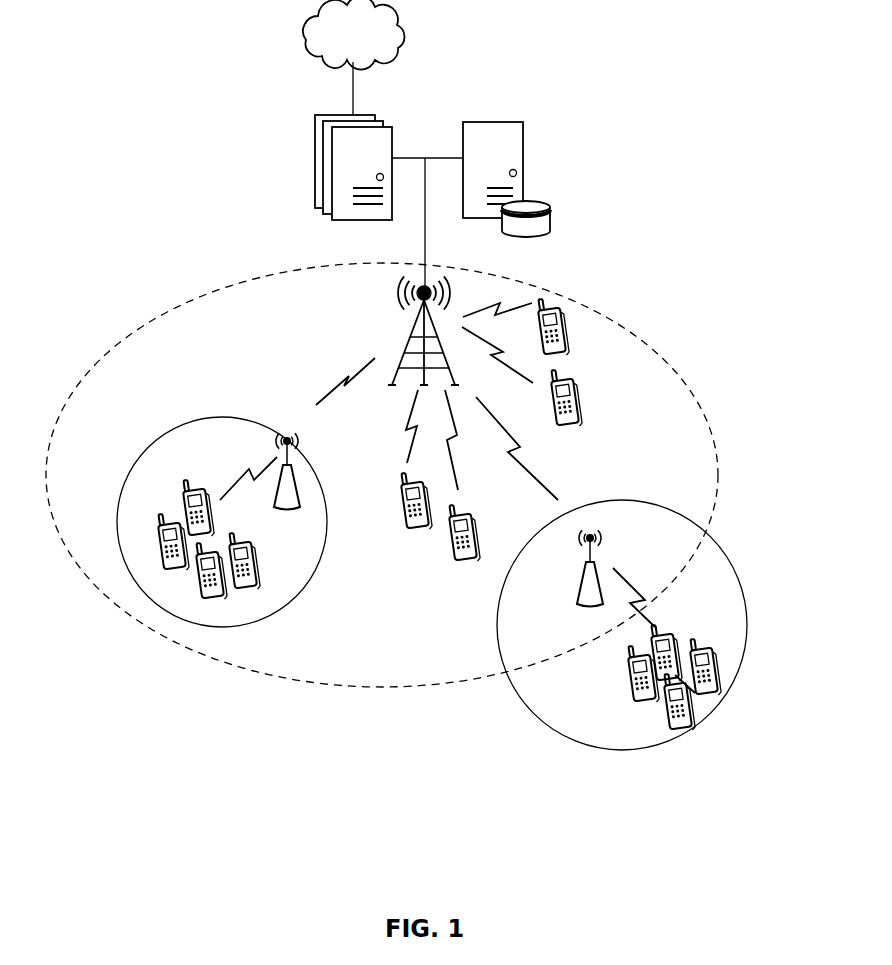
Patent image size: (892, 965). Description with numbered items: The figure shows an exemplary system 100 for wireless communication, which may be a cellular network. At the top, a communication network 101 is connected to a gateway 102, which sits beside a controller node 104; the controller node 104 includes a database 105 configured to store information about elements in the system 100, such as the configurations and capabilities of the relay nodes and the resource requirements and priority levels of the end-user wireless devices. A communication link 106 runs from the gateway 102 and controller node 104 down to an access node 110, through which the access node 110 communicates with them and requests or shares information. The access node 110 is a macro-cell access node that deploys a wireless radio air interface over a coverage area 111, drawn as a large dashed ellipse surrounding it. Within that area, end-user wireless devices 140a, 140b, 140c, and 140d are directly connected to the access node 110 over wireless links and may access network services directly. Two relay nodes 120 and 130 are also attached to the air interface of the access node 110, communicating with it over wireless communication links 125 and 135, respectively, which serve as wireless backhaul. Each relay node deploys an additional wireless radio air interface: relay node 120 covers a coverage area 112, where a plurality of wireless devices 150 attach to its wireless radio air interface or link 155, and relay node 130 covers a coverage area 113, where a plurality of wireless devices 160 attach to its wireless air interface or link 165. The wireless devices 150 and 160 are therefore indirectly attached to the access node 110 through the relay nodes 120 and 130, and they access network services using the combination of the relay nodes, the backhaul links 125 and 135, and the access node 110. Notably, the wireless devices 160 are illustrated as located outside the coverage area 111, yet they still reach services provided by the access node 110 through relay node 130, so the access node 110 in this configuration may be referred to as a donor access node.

The system 100 is at (455, 62).
The communication network 101 is at (372, 40).
The gateway 102 is at (321, 117).
The controller node 104 is at (523, 122).
The database 105 is at (550, 205).
The communication link 106 is at (425, 236).
The access node 110 is at (412, 343).
The coverage area 111 is at (302, 683).
The coverage area 112 is at (130, 465).
The coverage area 113 is at (743, 668).
The relay node 120 is at (295, 482).
The wireless communication link 125 is at (342, 382).
The relay node 130 is at (600, 562).
The wireless communication link 135 is at (527, 465).
The end-user wireless device 140a is at (562, 312).
The end-user wireless device 140b is at (575, 383).
The end-user wireless device 140c is at (417, 530).
The end-user wireless device 140d is at (473, 565).
The wireless devices 150 is at (266, 590).
The wireless radio air interface or link 155 is at (262, 467).
The wireless devices 160 is at (626, 719).
The wireless air interface or link 165 is at (653, 618).